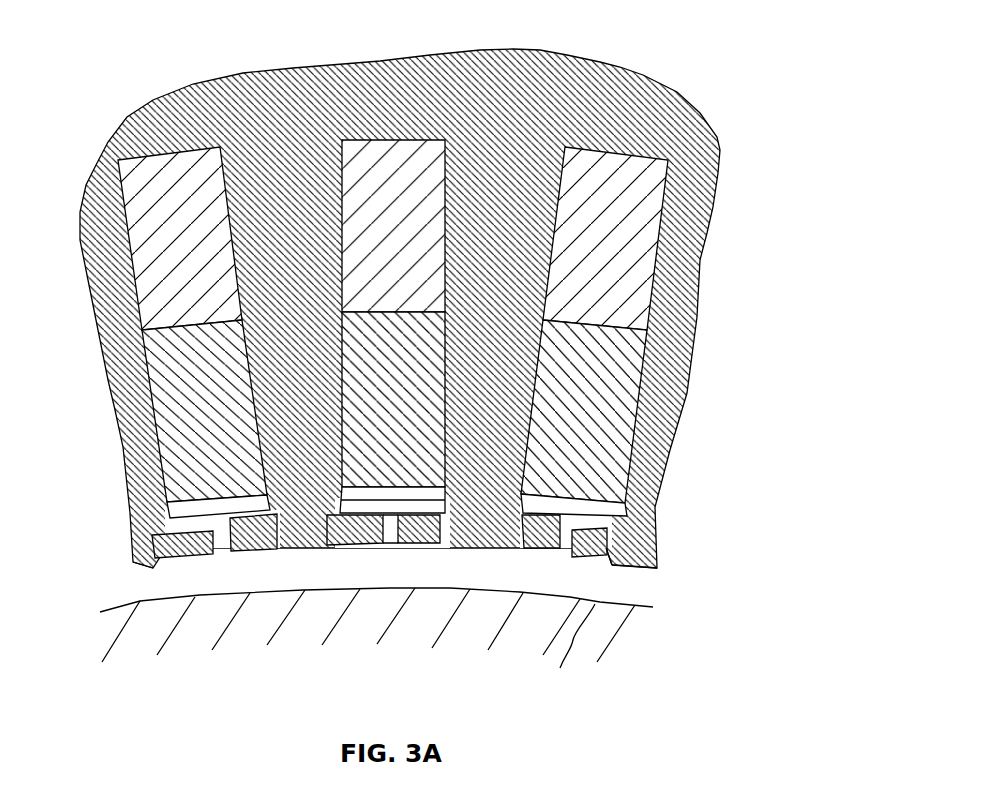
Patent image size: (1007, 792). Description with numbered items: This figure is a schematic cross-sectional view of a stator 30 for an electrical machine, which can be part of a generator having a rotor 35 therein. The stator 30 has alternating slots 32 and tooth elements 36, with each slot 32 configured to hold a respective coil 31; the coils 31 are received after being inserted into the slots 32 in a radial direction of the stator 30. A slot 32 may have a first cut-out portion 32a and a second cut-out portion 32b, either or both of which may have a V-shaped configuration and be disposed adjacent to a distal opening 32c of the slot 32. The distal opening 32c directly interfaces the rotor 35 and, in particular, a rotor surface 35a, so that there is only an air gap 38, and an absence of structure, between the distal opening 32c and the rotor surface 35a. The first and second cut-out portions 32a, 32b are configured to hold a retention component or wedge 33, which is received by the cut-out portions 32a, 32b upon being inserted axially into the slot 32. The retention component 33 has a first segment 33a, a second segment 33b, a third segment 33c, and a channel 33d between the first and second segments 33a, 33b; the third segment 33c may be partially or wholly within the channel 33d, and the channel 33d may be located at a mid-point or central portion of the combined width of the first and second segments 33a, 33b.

The stator 30 is at (415, 329).
The coil 31 is at (627, 227).
The slot 32 is at (415, 353).
The first cut-out portion 32a is at (128, 514).
The second cut-out portion 32b is at (610, 565).
The distal opening 32c is at (175, 562).
The retention component or wedge 33 is at (516, 535).
The first segment 33a is at (352, 530).
The second segment 33b is at (427, 527).
The third segment 33c is at (593, 513).
The channel 33d is at (393, 530).
The rotor 35 is at (392, 643).
The rotor surface 35a is at (567, 651).
The tooth element 36 is at (468, 455).
The air gap 38 is at (660, 590).